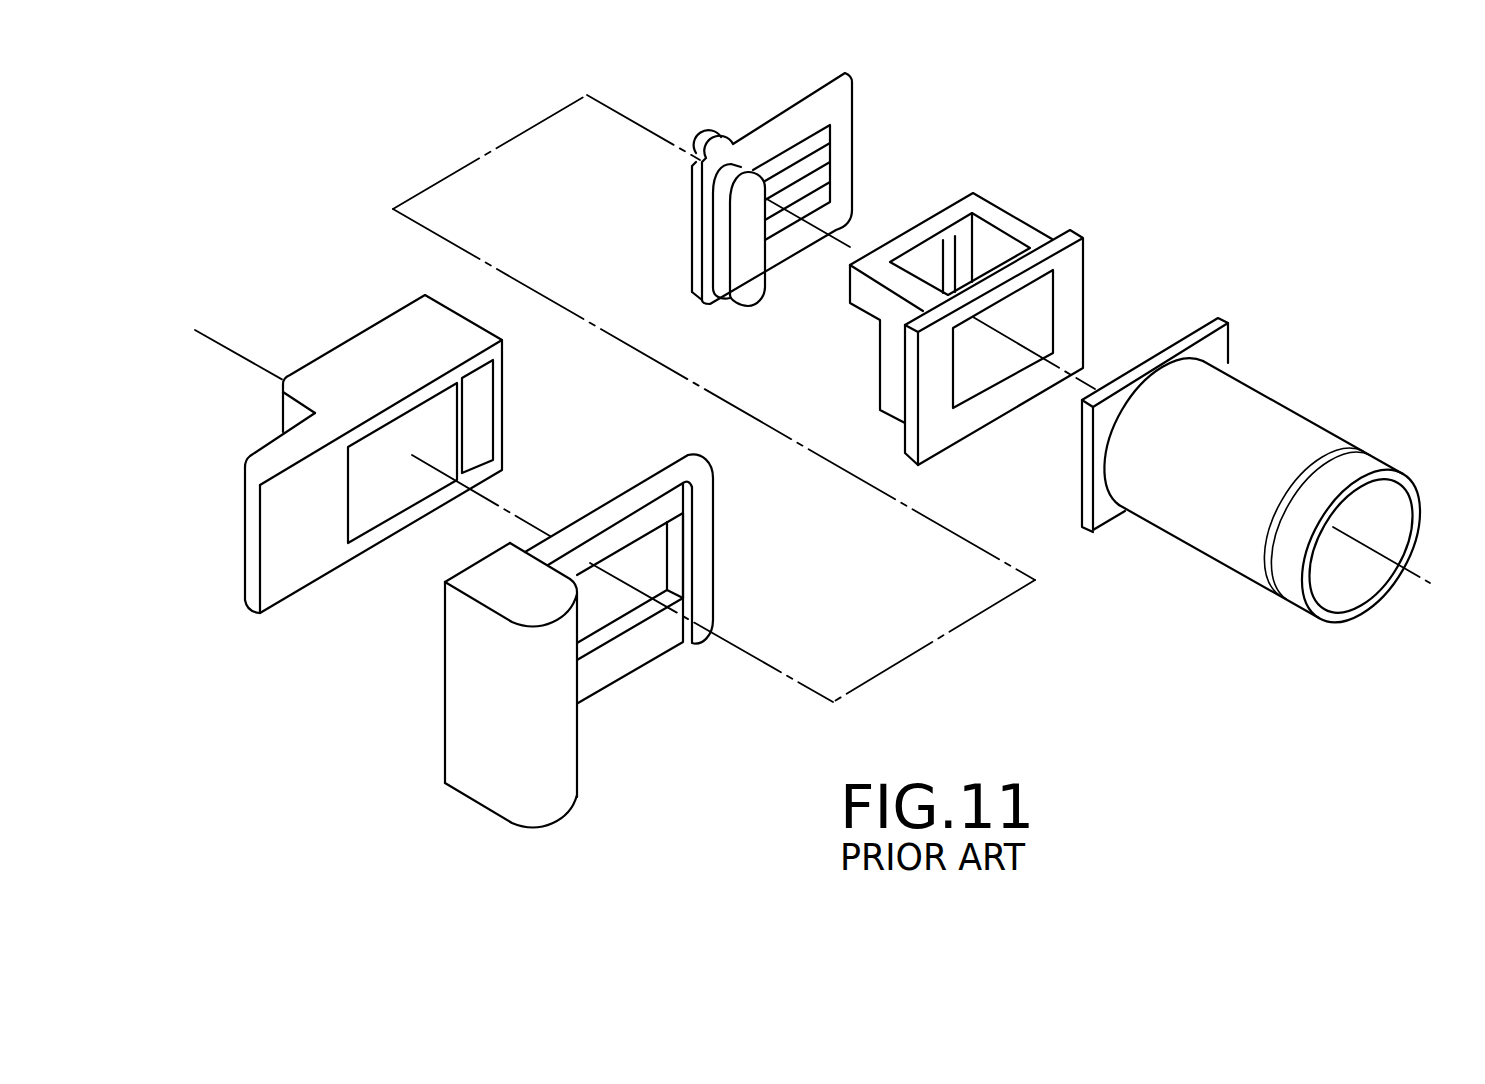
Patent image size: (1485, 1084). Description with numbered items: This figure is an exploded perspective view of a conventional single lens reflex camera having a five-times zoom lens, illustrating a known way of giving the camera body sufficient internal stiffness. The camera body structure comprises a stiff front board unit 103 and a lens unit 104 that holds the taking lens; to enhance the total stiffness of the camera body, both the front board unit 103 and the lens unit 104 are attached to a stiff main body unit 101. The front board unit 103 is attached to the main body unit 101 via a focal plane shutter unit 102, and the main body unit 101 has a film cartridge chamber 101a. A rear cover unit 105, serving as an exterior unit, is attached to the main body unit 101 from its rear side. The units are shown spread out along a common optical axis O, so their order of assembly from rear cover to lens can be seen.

The main body unit 101 is at (640, 668).
The film cartridge chamber 101a is at (470, 752).
The focal plane shutter unit 102 is at (843, 132).
The front board unit 103 is at (1015, 217).
The lens unit 104 is at (1283, 417).
The rear cover unit 105 is at (252, 567).
The optical axis O is at (1418, 578).